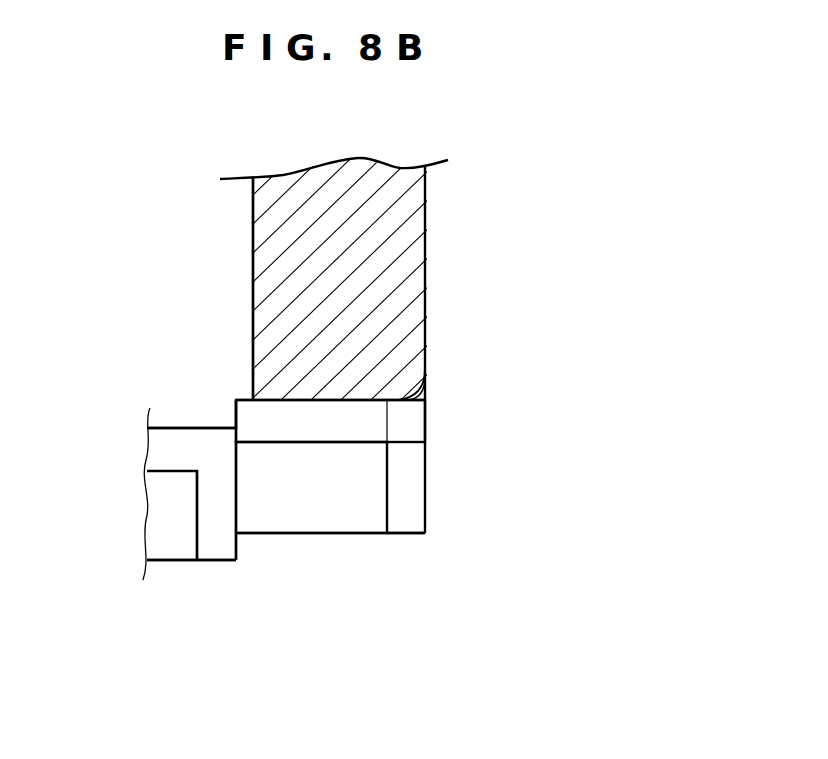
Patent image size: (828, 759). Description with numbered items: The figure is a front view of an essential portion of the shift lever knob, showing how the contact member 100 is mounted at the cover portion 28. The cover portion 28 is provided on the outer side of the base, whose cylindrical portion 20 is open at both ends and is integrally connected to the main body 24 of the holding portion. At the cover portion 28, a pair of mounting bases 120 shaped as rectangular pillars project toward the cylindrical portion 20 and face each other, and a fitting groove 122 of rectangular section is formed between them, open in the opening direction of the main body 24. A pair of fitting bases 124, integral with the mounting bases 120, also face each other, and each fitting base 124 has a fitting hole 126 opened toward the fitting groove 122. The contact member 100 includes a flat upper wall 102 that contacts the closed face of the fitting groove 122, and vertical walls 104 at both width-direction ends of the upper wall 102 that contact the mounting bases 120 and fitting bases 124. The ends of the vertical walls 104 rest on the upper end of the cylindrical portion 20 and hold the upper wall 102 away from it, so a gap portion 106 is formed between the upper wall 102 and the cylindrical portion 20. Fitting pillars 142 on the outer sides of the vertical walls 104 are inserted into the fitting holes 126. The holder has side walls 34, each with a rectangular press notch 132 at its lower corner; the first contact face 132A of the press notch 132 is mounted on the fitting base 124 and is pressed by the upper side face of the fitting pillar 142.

The cylindrical portion 20 is at (173, 543).
The main body 24 is at (412, 265).
The cover portion 28 is at (425, 380).
The side wall 34 is at (425, 190).
The contact member 100 is at (210, 425).
The upper wall 102 is at (173, 428).
The vertical wall 104 is at (240, 553).
The gap portion 106 is at (192, 548).
The mounting base 120 is at (333, 530).
The fitting groove 122 is at (228, 550).
The fitting base 124 is at (425, 467).
The fitting hole 126 is at (373, 510).
The press notch 132 is at (368, 402).
The first contact face 132A is at (270, 402).
The fitting pillar 142 is at (363, 518).